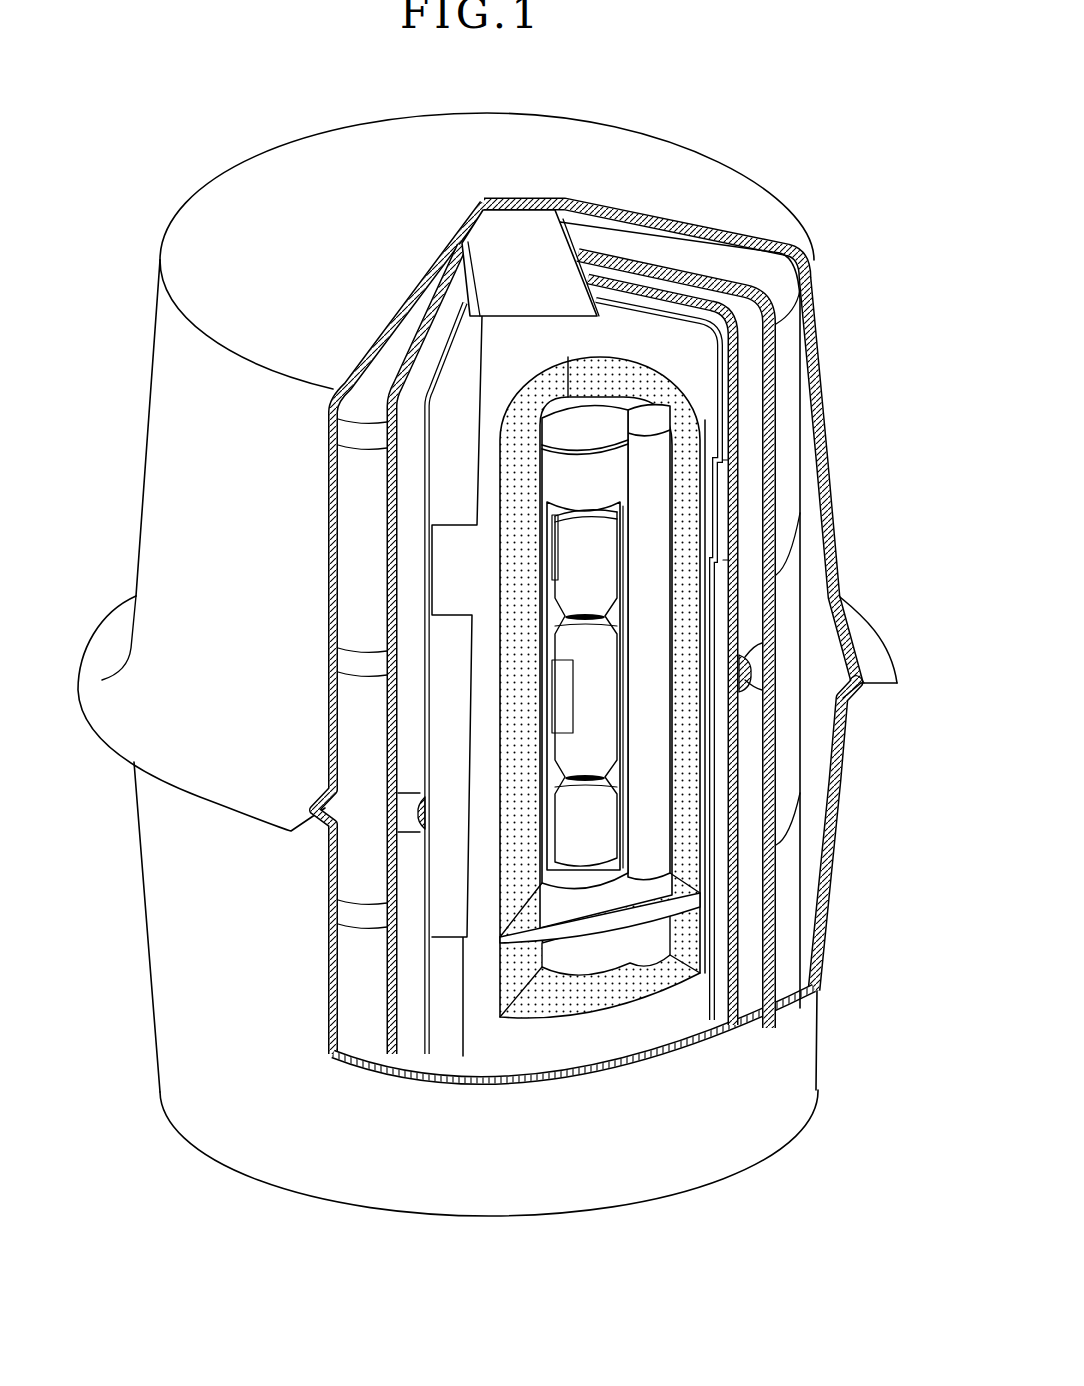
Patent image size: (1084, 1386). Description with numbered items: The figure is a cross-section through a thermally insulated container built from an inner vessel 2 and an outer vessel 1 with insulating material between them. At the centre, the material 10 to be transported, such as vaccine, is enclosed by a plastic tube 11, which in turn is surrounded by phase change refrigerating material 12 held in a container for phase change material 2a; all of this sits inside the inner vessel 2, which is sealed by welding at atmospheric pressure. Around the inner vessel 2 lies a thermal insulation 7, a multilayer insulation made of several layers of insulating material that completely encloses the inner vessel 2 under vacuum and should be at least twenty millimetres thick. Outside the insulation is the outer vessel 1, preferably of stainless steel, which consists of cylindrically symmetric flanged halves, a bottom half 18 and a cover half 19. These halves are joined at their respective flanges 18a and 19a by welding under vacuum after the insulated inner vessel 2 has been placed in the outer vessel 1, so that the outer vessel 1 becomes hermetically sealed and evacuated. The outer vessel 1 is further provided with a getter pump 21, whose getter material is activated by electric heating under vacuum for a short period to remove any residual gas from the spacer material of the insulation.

The outer vessel 1 is at (256, 238).
The inner vessel 2 is at (430, 366).
The container for phase change material 2a is at (720, 583).
The thermal insulation 7 is at (702, 257).
The material to be transported 10 is at (600, 735).
The plastic tube 11 is at (590, 480).
The phase change refrigerating material 12 is at (705, 358).
The bottom half 18 is at (832, 850).
The flange of bottom half 18a is at (867, 688).
The cover half 19 is at (844, 594).
The flange of cover half 19a is at (864, 657).
The getter pump 21 is at (518, 258).